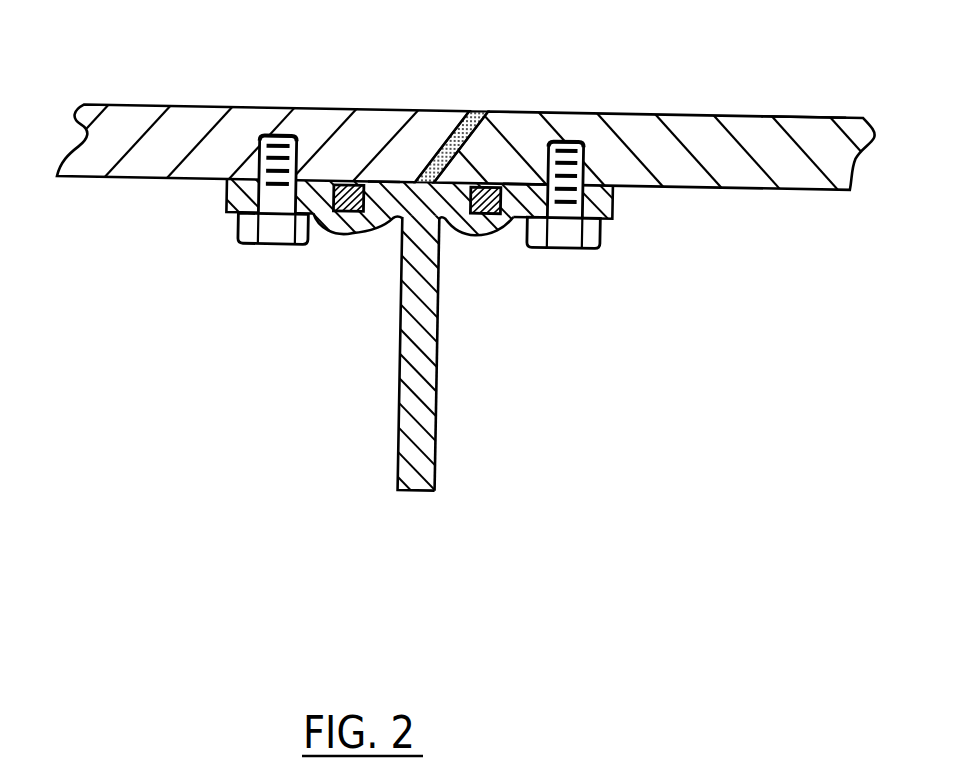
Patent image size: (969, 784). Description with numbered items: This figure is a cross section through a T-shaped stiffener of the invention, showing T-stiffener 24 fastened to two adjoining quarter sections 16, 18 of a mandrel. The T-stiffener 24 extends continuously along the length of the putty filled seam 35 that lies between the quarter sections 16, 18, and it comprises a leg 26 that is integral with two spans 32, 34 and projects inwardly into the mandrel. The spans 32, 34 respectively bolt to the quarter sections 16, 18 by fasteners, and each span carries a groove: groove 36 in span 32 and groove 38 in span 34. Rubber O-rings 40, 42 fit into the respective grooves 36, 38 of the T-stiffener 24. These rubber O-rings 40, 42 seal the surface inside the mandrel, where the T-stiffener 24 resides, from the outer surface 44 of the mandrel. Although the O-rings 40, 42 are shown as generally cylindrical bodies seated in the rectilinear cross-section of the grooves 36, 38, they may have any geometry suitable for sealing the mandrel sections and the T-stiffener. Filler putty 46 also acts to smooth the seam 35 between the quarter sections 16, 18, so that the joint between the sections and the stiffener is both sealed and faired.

The quarter section 16 is at (742, 117).
The quarter section 18 is at (122, 107).
The T-stiffener 24 is at (270, 413).
The leg 26 is at (435, 488).
The span 32 is at (377, 217).
The span 34 is at (613, 192).
The putty filled seam 35 is at (477, 115).
The groove 36 is at (507, 180).
The groove 38 is at (379, 182).
The rubber O-ring 40 is at (350, 217).
The rubber O-ring 42 is at (485, 213).
The outer surface 44 is at (797, 117).
The filler putty 46 is at (437, 217).